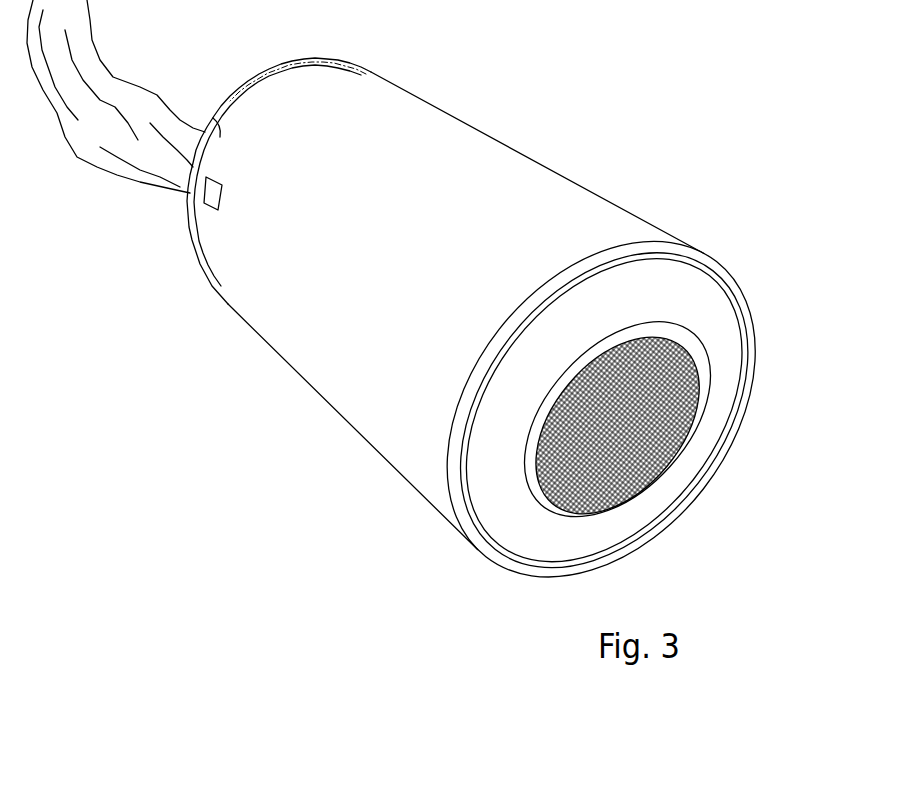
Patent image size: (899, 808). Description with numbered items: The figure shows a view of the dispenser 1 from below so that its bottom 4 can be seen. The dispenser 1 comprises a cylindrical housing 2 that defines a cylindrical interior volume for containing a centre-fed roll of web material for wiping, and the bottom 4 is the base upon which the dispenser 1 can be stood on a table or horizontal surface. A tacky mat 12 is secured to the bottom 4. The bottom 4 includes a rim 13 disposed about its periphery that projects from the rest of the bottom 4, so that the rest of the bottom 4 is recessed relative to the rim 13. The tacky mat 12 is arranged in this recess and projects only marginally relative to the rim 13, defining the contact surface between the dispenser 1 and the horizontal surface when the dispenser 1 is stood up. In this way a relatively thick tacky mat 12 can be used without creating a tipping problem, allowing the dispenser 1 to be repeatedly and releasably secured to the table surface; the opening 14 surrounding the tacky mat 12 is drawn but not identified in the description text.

The sensor device 1 is at (423, 318).
The housing 2 is at (308, 331).
The end face 4 is at (703, 290).
The mesh membrane 12 is at (643, 448).
The outer ring 13 is at (749, 381).
The rim opening 14 is at (675, 331).